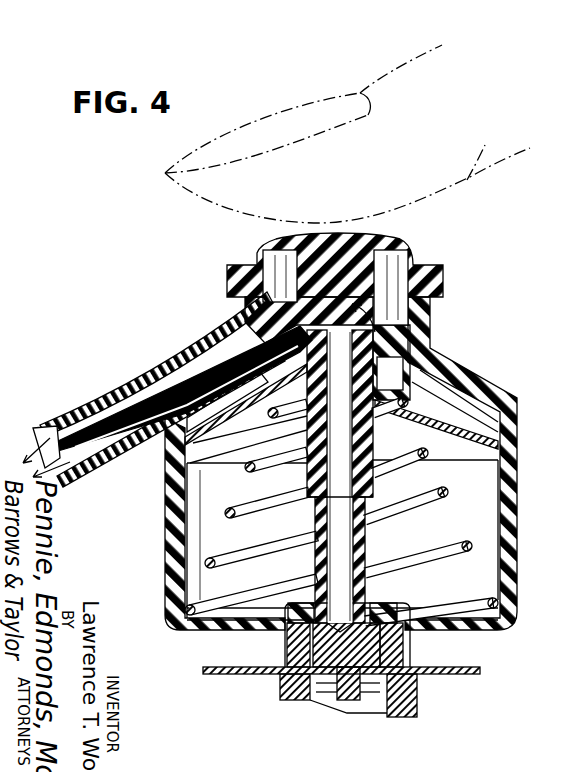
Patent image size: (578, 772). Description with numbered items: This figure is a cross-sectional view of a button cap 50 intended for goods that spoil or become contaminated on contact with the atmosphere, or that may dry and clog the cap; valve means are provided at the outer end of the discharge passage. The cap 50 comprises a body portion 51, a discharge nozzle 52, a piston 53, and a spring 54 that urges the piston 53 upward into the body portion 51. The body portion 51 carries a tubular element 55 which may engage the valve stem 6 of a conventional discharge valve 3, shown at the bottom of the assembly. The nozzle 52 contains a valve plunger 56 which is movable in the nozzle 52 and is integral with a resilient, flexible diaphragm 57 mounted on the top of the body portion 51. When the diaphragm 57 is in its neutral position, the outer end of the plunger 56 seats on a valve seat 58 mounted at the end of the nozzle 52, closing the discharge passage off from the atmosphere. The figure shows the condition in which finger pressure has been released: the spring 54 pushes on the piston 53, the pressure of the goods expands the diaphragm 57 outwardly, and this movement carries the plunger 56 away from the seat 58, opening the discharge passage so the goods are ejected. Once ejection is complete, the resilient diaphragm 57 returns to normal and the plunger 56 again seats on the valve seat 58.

The discharge valve 3 is at (430, 705).
The valve stem 6 is at (372, 548).
The button cap 50 is at (476, 334).
The body portion 51 is at (520, 540).
The discharge nozzle 52 is at (183, 345).
The piston 53 is at (445, 430).
The spring 54 is at (263, 502).
The tubular element 55 is at (372, 490).
The valve plunger 56 is at (132, 382).
The diaphragm 57 is at (392, 247).
The valve seat 58 is at (42, 422).